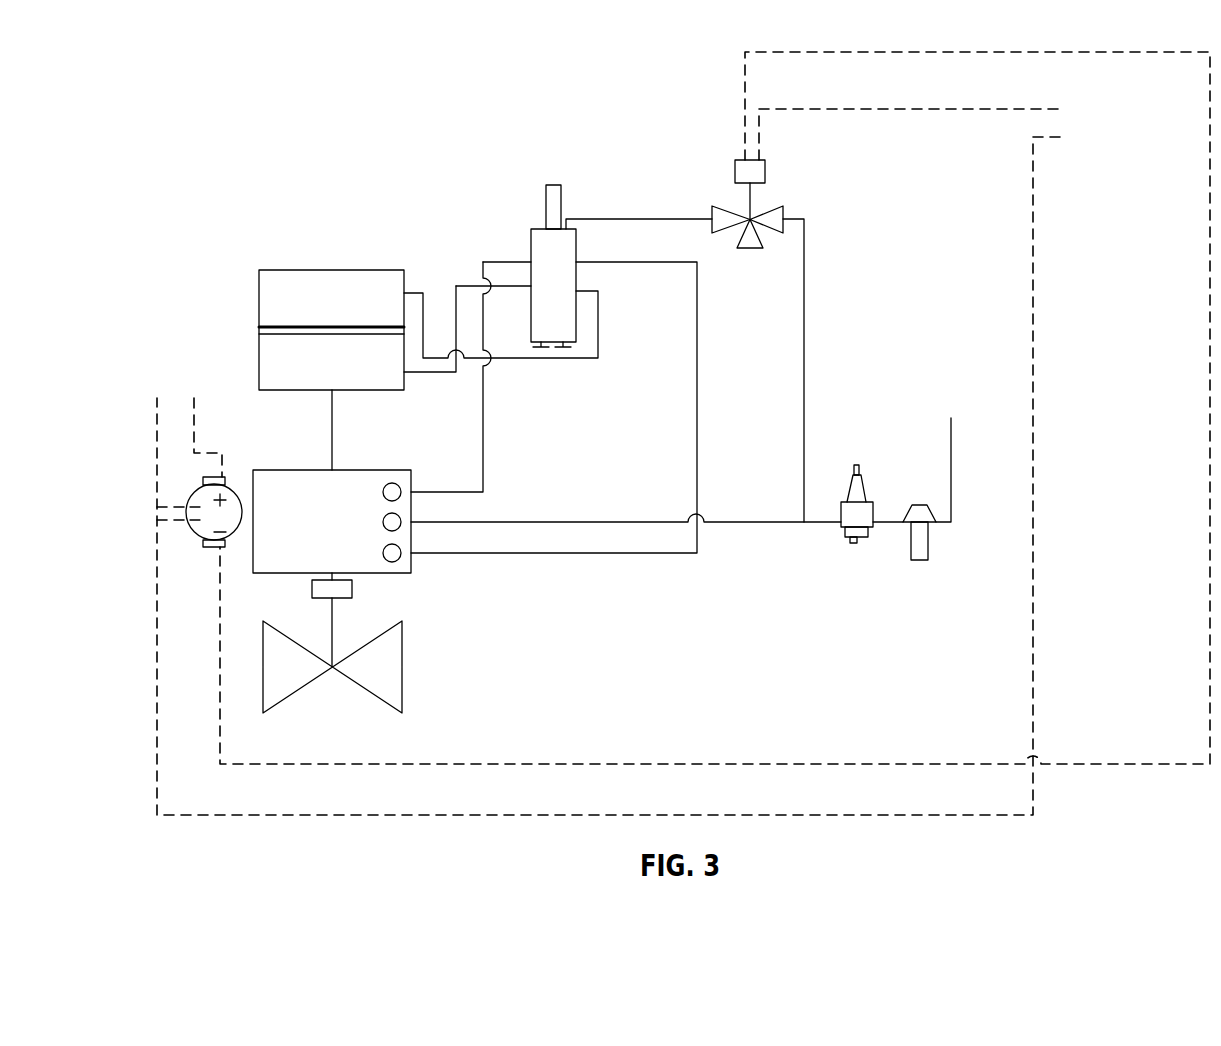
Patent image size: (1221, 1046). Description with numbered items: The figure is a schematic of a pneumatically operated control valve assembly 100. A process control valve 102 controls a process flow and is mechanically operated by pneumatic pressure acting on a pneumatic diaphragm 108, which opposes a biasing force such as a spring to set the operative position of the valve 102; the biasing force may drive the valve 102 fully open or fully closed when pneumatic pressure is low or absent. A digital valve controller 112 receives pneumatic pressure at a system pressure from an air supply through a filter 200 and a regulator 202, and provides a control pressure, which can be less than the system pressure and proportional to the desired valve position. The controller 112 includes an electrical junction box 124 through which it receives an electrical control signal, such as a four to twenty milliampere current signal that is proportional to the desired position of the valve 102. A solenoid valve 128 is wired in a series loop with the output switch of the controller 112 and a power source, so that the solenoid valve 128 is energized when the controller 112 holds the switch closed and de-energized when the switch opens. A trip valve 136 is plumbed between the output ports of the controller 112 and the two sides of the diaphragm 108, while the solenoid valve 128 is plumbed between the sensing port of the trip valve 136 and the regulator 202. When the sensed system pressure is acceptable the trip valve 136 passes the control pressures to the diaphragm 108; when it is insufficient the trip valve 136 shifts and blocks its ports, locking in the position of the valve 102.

The pneumatically operated control valve assembly 100 is at (251, 80).
The process control valve 102 is at (402, 667).
The pneumatic diaphragm 108 is at (259, 298).
The controller 112 is at (297, 470).
The electrical junction box 124 is at (199, 541).
The solenoid valve 128 is at (720, 195).
The trip valve 136 is at (520, 195).
The filter 200 is at (930, 538).
The regulator 202 is at (856, 544).